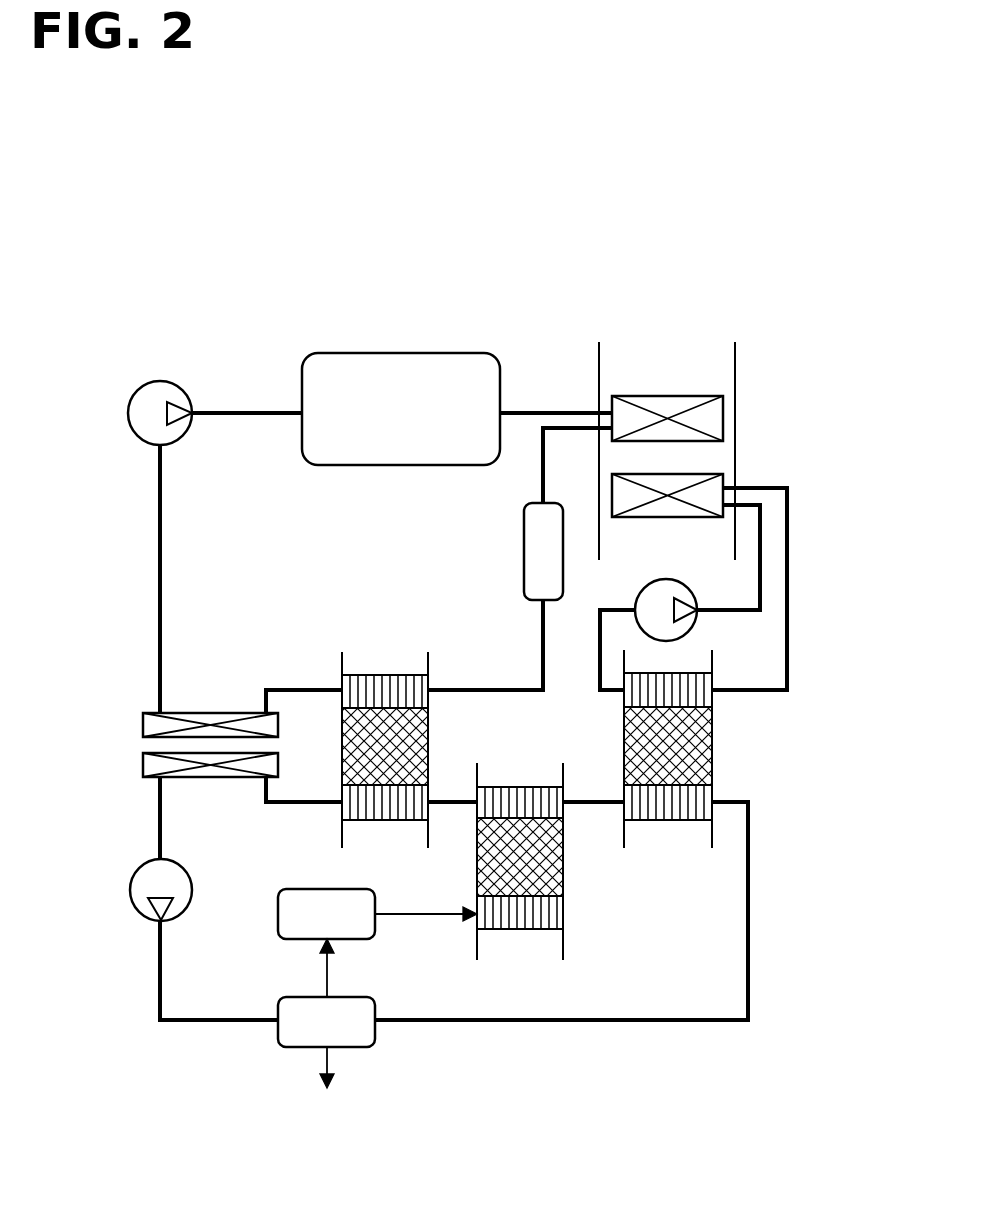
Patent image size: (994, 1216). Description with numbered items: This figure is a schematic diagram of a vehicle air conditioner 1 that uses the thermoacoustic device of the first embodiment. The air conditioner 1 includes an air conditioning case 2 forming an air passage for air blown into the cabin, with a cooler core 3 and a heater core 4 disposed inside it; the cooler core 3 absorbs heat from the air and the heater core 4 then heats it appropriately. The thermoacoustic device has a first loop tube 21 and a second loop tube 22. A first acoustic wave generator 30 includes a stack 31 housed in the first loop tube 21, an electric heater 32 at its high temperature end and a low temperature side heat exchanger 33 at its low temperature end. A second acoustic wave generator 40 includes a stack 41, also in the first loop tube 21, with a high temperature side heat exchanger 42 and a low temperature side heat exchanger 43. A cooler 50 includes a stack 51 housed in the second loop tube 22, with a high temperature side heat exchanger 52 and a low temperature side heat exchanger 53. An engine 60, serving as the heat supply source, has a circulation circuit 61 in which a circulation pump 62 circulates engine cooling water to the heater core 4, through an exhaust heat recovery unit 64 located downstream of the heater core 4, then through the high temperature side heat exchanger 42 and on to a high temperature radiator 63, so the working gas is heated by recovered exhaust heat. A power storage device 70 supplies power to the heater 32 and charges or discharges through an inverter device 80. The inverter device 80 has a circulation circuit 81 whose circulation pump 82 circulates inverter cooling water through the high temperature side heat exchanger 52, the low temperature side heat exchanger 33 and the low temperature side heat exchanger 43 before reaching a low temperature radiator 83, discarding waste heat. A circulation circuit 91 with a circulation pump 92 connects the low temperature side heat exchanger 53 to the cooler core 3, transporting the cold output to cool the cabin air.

The air conditioner 1 is at (792, 335).
The air conditioning case 2 is at (737, 372).
The cooler core 3 is at (735, 484).
The heater core 4 is at (723, 414).
The first loop tube 21 is at (342, 662).
The second loop tube 22 is at (714, 832).
The first acoustic wave generator 30 is at (514, 813).
The stack 31 is at (563, 872).
The heater 32 is at (555, 912).
The low temperature side heat exchanger 33 is at (521, 790).
The second acoustic wave generator 40 is at (391, 753).
The stack 41 is at (428, 722).
The high temperature side heat exchanger 42 is at (428, 680).
The low temperature side heat exchanger 43 is at (346, 810).
The cooler 50 is at (663, 746).
The stack 51 is at (700, 745).
The high temperature side heat exchanger 52 is at (700, 800).
The low temperature side heat exchanger 53 is at (695, 698).
The engine 60 is at (395, 354).
The circulation circuit 61 is at (237, 411).
The circulation pump 62 is at (160, 381).
The high temperature radiator 63 is at (210, 722).
The exhaust heat recovery unit 64 is at (524, 555).
The power storage device 70 is at (278, 913).
The inverter device 80 is at (278, 1034).
The circulation circuit 81 is at (488, 1024).
The circulation pump 82 is at (150, 926).
The low temperature radiator 83 is at (208, 770).
The circulation circuit 91 is at (787, 621).
The circulation pump 92 is at (694, 624).